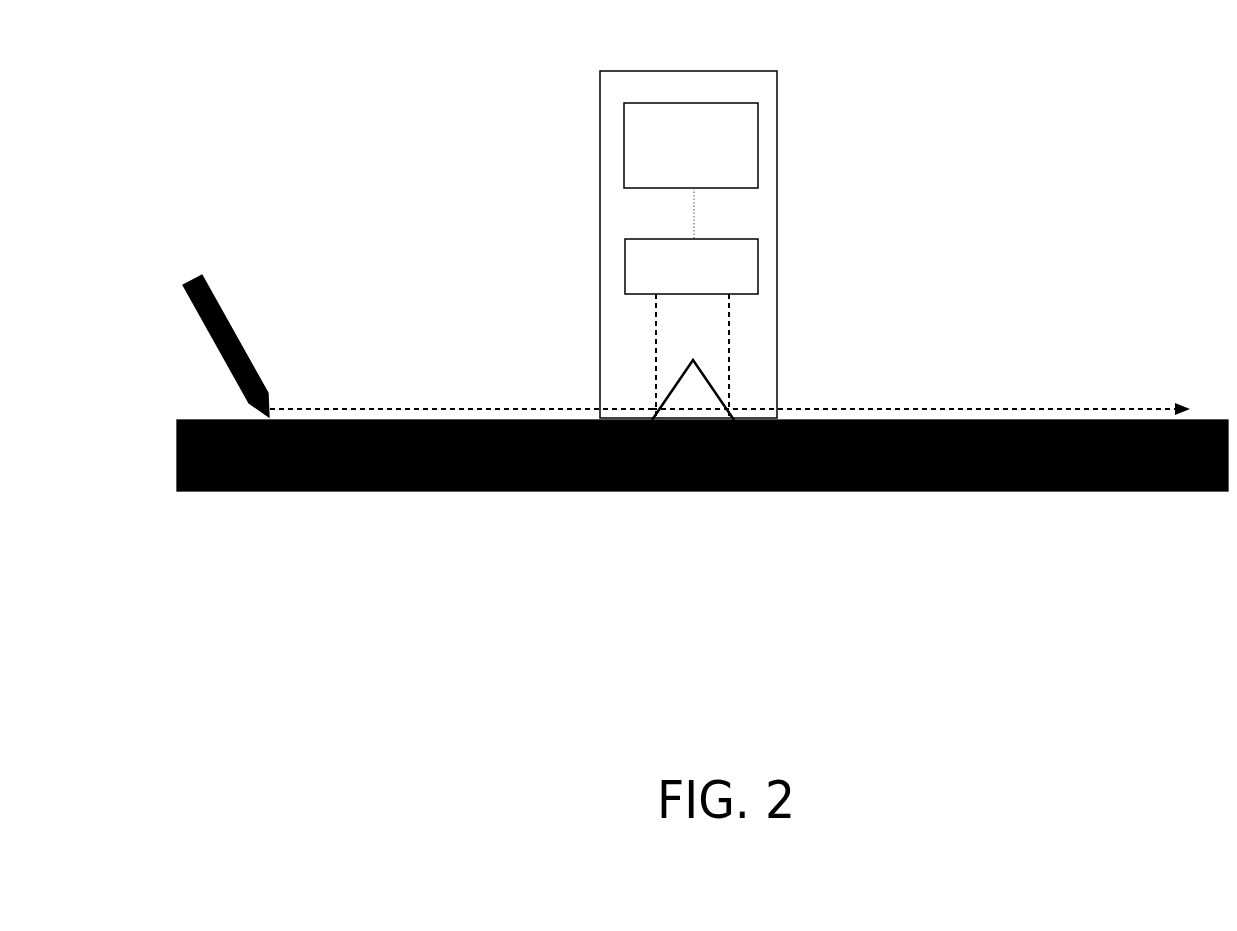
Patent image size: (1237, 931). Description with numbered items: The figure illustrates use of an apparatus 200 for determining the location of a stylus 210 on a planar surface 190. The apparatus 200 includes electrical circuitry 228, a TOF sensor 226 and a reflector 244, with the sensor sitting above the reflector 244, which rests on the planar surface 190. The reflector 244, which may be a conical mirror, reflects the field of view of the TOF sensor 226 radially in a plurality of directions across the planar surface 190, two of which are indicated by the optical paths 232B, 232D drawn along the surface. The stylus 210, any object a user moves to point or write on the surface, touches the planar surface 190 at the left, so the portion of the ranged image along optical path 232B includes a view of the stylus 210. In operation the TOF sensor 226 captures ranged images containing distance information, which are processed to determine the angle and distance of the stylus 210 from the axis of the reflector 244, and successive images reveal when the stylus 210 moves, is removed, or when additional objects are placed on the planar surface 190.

The apparatus 200 is at (792, 88).
The electrical circuitry 228 is at (691, 145).
The TOF sensor 226 is at (691, 328).
The reflector 244 is at (693, 390).
The optical path 232B is at (399, 392).
The optical path 232D is at (957, 392).
The stylus 210 is at (223, 279).
The planar surface 190 is at (1064, 512).